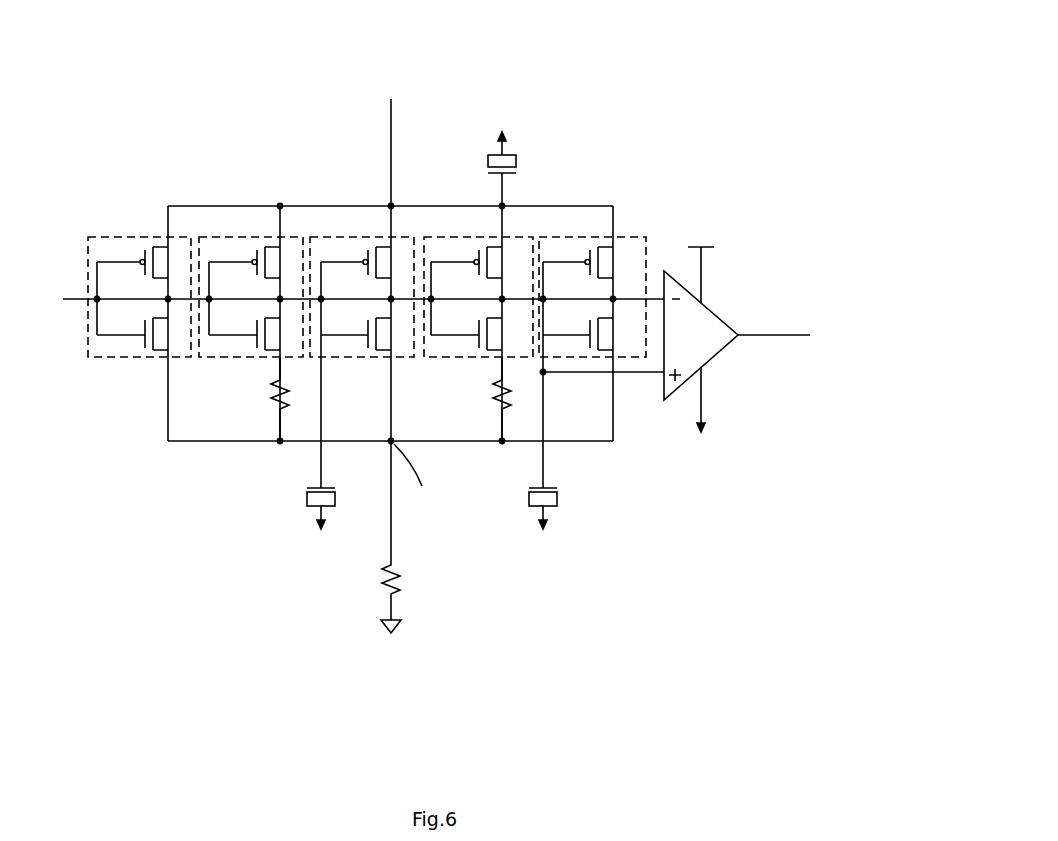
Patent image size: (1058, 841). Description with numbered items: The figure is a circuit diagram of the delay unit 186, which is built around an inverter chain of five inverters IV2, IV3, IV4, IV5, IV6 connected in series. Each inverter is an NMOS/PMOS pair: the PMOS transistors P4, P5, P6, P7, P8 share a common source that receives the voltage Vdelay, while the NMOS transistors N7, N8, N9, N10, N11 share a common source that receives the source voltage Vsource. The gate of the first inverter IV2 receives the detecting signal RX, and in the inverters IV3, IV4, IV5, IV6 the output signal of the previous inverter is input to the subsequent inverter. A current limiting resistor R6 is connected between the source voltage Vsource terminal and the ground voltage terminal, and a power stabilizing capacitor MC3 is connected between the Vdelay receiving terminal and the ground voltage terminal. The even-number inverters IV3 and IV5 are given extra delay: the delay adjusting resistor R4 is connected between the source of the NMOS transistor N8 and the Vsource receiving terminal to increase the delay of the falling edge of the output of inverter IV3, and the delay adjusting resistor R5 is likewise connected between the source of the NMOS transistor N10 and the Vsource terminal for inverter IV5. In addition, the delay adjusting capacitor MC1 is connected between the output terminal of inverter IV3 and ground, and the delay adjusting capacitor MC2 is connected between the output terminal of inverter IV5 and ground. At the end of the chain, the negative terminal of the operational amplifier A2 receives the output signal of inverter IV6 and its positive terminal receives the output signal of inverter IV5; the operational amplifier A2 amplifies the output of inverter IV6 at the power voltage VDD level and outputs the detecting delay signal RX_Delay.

The delay unit 186 is at (636, 52).
The inverter IV2 is at (141, 323).
The inverter IV3 is at (253, 323).
The inverter IV4 is at (364, 323).
The inverter IV5 is at (482, 323).
The inverter IV6 is at (595, 323).
The PMOS transistor P4 is at (167, 262).
The PMOS transistor P5 is at (279, 262).
The PMOS transistor P6 is at (390, 262).
The PMOS transistor P7 is at (501, 262).
The PMOS transistor P8 is at (612, 262).
The NMOS transistor N7 is at (170, 334).
The NMOS transistor N8 is at (282, 334).
The NMOS transistor N9 is at (393, 334).
The NMOS transistor N10 is at (510, 334).
The NMOS transistor N11 is at (621, 334).
The delay adjusting resistor R4 is at (294, 399).
The delay adjusting resistor R5 is at (517, 399).
The current limiting resistor R6 is at (408, 537).
The delay adjusting capacitor MC1 is at (345, 432).
The delay adjusting capacitor MC2 is at (596, 432).
The power stabilizing capacitor MC3 is at (526, 169).
The operational amplifier A2 is at (718, 317).